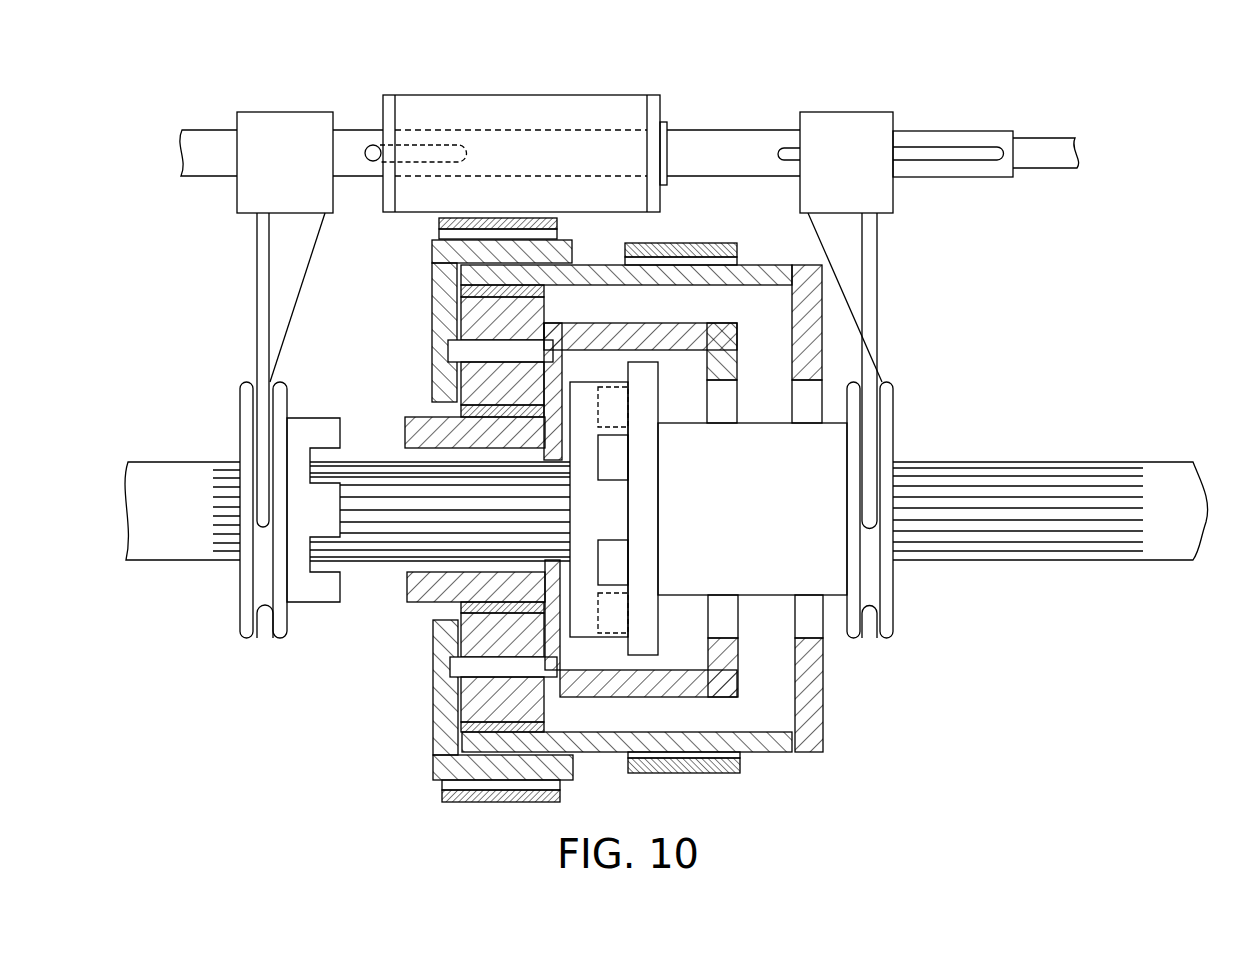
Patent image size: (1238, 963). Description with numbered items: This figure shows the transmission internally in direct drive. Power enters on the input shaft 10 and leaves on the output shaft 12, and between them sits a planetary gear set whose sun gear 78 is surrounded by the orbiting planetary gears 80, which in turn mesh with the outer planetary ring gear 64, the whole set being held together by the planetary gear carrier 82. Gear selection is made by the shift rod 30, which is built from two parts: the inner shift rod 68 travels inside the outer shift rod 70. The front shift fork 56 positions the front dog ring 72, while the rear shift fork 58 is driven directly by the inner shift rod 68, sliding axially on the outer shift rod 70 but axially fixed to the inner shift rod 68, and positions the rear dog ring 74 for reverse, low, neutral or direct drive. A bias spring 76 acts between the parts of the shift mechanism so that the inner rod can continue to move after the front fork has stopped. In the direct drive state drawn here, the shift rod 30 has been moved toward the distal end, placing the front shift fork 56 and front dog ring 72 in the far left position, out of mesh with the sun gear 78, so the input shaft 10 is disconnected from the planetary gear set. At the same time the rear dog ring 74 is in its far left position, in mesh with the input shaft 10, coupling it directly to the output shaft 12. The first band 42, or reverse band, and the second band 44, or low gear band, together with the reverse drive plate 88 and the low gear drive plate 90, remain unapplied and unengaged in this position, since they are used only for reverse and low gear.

The input shaft 10 is at (176, 470).
The output shaft 12 is at (1130, 462).
The shift rod 30 is at (1040, 175).
The first band 42 is at (452, 800).
The second band 44 is at (725, 775).
The front shift fork 56 is at (283, 138).
The rear shift fork 58 is at (843, 135).
The planetary ring gear 64 is at (750, 272).
The inner shift rod 68 is at (1046, 148).
The outer shift rod 70 is at (750, 130).
The front dog ring 72 is at (300, 583).
The rear dog ring 74 is at (760, 445).
The bias spring 76 is at (565, 105).
The sun gear 78 is at (440, 593).
The planetary gears 80 is at (478, 700).
The planetary gear carrier 82 is at (595, 335).
The reverse drive plate 88 is at (805, 668).
The low gear drive plate 90 is at (722, 668).